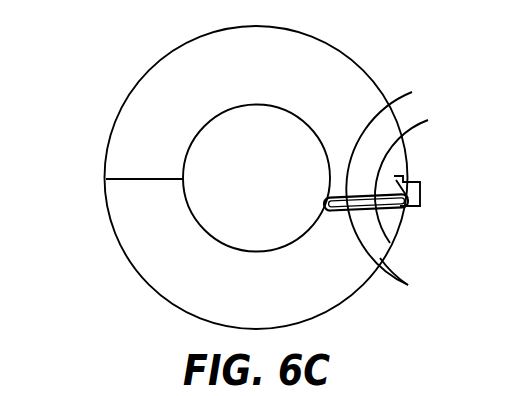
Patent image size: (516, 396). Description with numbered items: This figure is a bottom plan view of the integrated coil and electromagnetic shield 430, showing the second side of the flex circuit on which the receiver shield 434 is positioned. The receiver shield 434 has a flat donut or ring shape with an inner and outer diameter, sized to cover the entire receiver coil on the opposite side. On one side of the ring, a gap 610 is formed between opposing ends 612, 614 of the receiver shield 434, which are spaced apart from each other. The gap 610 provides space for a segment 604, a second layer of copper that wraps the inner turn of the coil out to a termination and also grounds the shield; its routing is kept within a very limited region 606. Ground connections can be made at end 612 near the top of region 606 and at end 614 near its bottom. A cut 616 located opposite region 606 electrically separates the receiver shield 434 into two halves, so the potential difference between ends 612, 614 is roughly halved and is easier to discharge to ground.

The integrated coil and electromagnetic shield 430 is at (130, 28).
The receiver shield 434 is at (275, 75).
The segment 604 is at (400, 182).
The region 606 is at (421, 193).
The gap 610 is at (327, 200).
The end 612 is at (420, 173).
The end 614 is at (411, 284).
The cut 616 is at (147, 179).